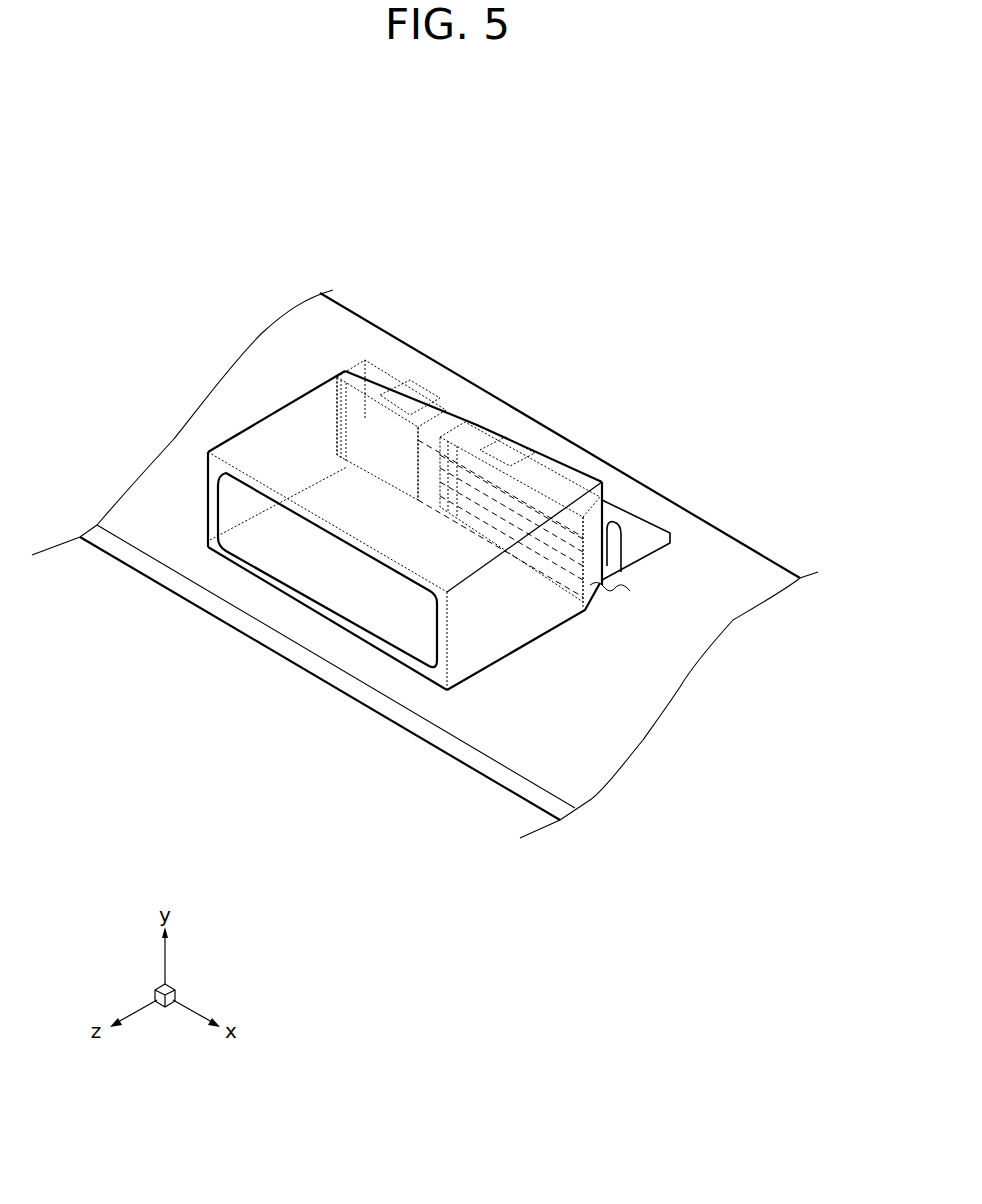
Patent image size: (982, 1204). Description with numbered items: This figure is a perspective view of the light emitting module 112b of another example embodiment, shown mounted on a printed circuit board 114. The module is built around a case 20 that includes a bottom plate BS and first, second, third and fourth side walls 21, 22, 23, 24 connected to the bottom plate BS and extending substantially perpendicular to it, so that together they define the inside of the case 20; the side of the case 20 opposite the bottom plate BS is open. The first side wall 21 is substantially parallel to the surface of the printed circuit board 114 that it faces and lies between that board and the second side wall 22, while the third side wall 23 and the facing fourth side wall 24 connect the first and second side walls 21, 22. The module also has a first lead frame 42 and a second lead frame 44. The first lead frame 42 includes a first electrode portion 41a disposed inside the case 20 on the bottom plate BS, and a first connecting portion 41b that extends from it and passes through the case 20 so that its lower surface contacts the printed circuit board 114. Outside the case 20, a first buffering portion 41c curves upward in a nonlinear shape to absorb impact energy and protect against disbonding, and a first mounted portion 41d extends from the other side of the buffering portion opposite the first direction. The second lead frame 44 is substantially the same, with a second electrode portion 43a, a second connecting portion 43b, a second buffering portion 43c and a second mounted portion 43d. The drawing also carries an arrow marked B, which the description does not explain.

The case 20 is at (352, 321).
The first side wall 21 is at (383, 652).
The second side wall 22 is at (347, 513).
The third side wall 23 is at (487, 643).
The fourth side wall 24 is at (207, 478).
The first electrode portion 41a is at (510, 530).
The first connecting portion 41b is at (582, 510).
The first buffering portion 41c is at (623, 593).
The first mounted portion 41d is at (618, 516).
The first lead frame 42 is at (784, 448).
The second electrode portion 43a is at (373, 420).
The second connecting portion 43b is at (397, 467).
The second buffering portion 43c is at (445, 428).
The second mounted portion 43d is at (500, 497).
The second lead frame 44 is at (450, 267).
The bottom plate BS is at (503, 473).
The printed circuit board 114 is at (749, 586).
The light emitting module 112b is at (412, 187).
The direction B is at (641, 678).